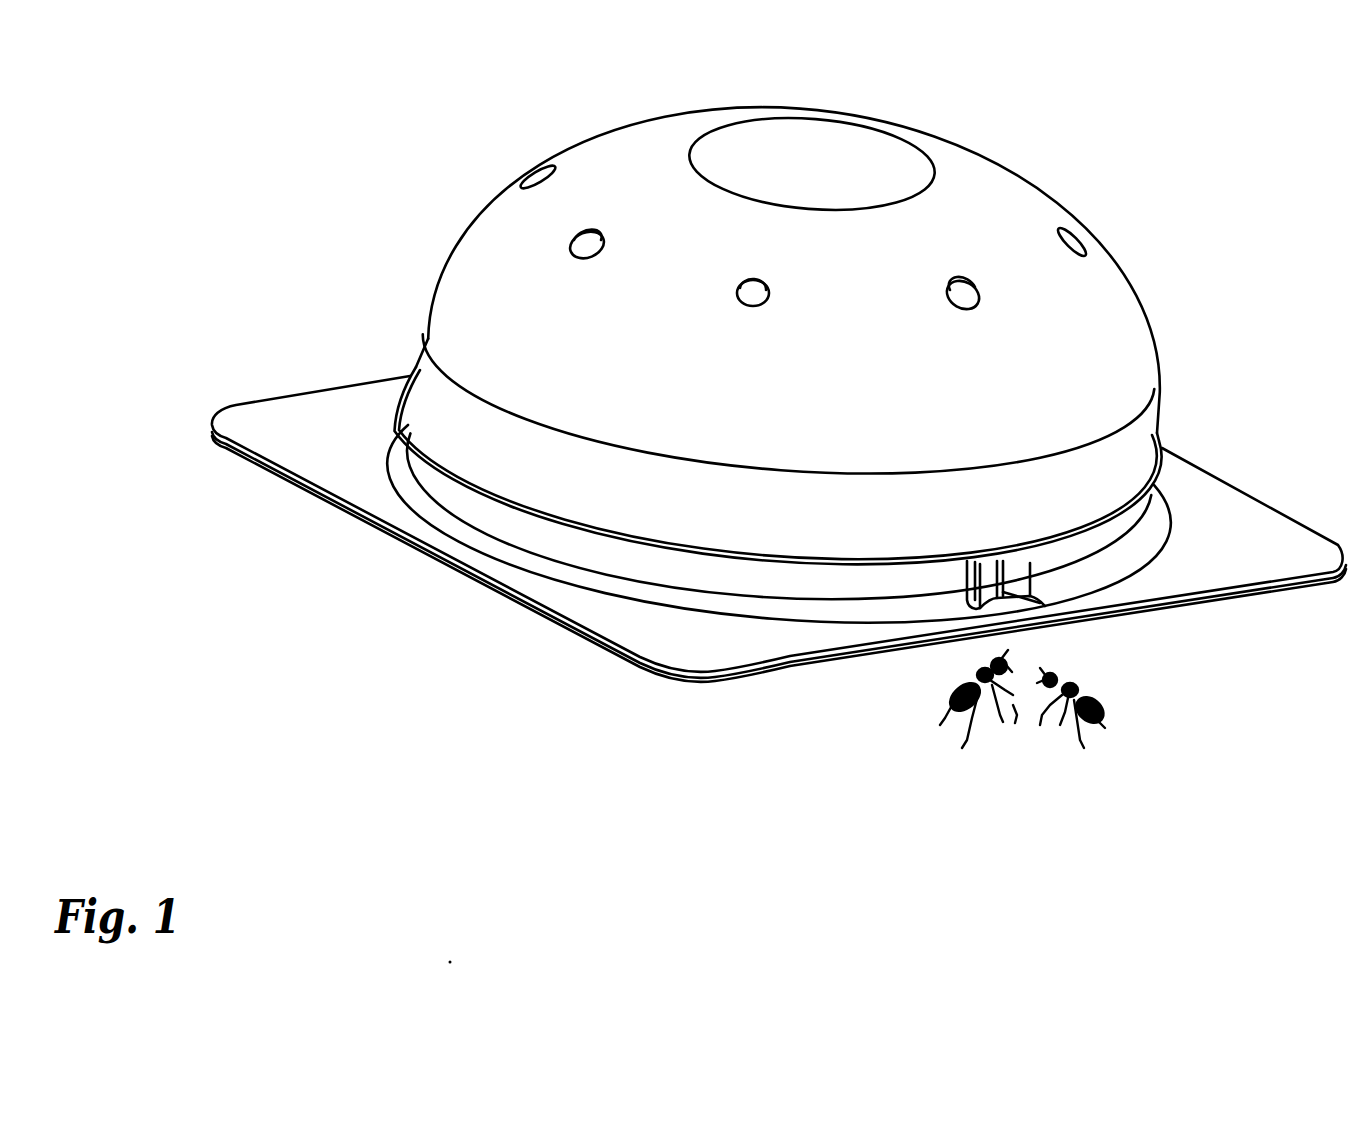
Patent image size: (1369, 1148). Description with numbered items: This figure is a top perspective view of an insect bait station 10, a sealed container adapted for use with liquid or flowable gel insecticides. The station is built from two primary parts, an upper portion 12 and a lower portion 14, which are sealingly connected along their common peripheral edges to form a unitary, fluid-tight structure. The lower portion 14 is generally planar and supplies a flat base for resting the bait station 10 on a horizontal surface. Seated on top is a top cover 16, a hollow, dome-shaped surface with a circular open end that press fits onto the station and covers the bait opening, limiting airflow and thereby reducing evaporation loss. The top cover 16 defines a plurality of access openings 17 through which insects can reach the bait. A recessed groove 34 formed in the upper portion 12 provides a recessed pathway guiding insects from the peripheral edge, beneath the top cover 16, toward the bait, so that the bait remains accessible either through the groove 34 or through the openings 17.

The insect bait station 10 is at (375, 180).
The upper portion 12 is at (297, 450).
The lower portion 14 is at (317, 492).
The top cover 16 is at (457, 303).
The access openings 17 is at (594, 260).
The recessed groove 34 is at (1003, 583).